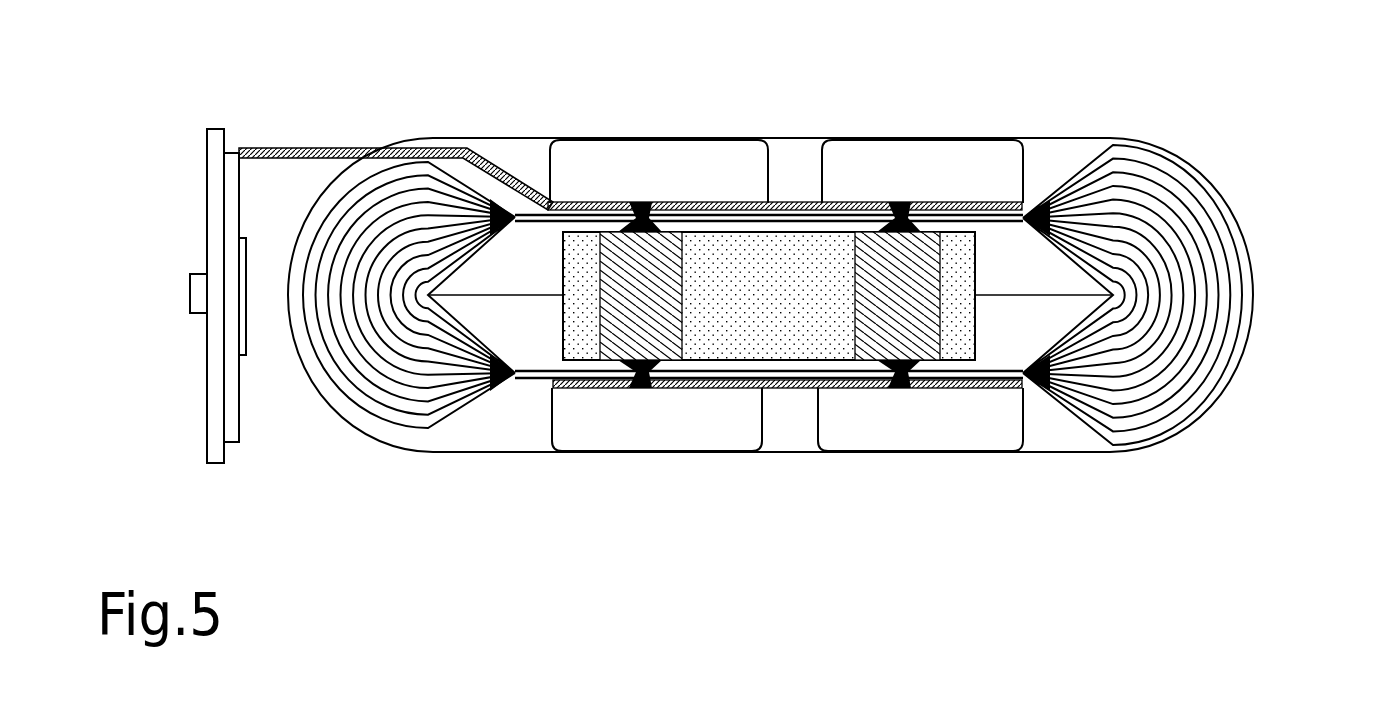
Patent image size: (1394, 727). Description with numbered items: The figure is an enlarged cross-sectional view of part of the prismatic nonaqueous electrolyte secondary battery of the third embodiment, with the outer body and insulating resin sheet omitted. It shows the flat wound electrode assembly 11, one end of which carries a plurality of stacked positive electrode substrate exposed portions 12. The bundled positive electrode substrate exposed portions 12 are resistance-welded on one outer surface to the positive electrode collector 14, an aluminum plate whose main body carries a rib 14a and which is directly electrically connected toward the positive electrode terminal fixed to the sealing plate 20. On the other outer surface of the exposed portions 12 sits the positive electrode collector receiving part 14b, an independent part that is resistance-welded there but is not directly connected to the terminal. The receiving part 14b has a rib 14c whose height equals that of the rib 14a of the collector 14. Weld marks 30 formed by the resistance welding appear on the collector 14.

The flat wound electrode assembly 11 is at (1220, 306).
The positive electrode substrate exposed portions 12 is at (522, 333).
The positive electrode collector 14 is at (515, 212).
The rib 14a is at (957, 167).
The positive electrode collector receiving part 14b is at (788, 390).
The rib 14c is at (618, 427).
The sealing plate 20 is at (218, 175).
The weld marks 30 is at (643, 203).